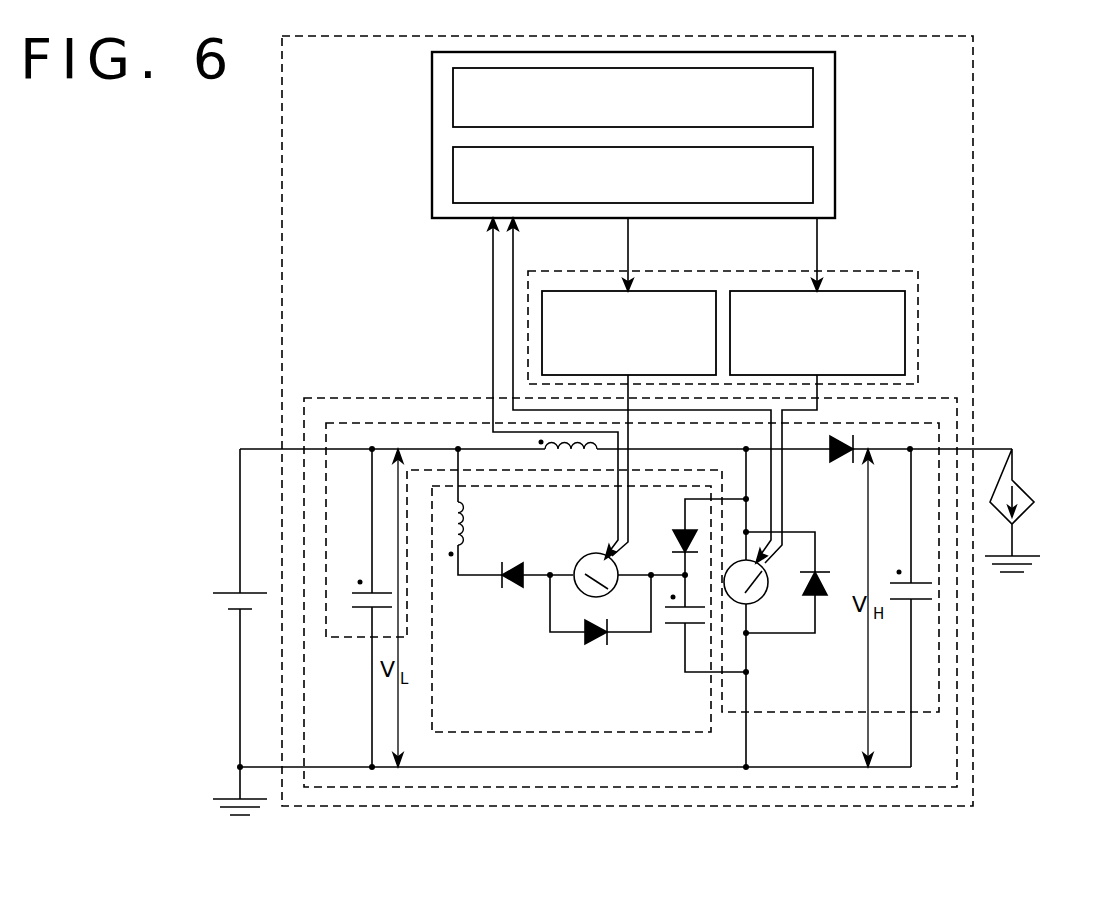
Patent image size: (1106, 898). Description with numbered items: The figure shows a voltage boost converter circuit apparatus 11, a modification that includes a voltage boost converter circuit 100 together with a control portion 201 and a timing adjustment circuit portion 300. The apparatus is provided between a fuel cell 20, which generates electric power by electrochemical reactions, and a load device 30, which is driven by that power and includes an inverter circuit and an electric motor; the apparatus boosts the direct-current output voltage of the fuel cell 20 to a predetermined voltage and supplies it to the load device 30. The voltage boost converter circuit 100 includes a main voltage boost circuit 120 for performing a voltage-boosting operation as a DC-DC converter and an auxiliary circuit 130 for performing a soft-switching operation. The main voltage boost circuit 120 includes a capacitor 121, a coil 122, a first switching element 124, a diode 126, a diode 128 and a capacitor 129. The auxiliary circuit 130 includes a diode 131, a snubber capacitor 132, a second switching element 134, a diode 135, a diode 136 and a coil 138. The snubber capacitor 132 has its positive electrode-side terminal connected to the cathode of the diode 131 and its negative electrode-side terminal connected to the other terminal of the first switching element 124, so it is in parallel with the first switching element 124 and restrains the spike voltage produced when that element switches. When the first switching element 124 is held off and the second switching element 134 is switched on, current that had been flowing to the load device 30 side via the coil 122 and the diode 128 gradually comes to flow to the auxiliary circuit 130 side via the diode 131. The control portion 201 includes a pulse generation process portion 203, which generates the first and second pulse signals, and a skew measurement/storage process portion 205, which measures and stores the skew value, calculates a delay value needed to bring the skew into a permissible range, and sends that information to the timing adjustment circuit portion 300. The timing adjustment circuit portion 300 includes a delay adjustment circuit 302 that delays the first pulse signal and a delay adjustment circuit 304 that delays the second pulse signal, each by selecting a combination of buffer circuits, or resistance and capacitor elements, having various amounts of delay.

The voltage boost converter circuit apparatus 11 is at (973, 229).
The fuel cell 20 is at (222, 598).
The load device 30 is at (1035, 503).
The voltage boost converter circuit 100 is at (940, 390).
The main voltage boost circuit 120 is at (939, 690).
The capacitor 121 is at (360, 578).
The coil 122 is at (573, 458).
The first switching element 124 is at (758, 604).
The diode 126 is at (822, 585).
The diode 128 is at (838, 462).
The capacitor 129 is at (900, 603).
The auxiliary circuit 130 is at (575, 733).
The diode 131 is at (676, 540).
The snubber capacitor 132 is at (672, 627).
The second switching element 134 is at (576, 558).
The diode 135 is at (595, 646).
The diode 136 is at (516, 588).
The coil 138 is at (466, 530).
The control portion 201 is at (836, 66).
The pulse generation process portion 203 is at (813, 96).
The skew measurement/storage process portion 205 is at (813, 172).
The timing adjustment circuit portion 300 is at (918, 272).
The delay adjustment circuit 302 is at (863, 291).
The delay adjustment circuit 304 is at (677, 291).